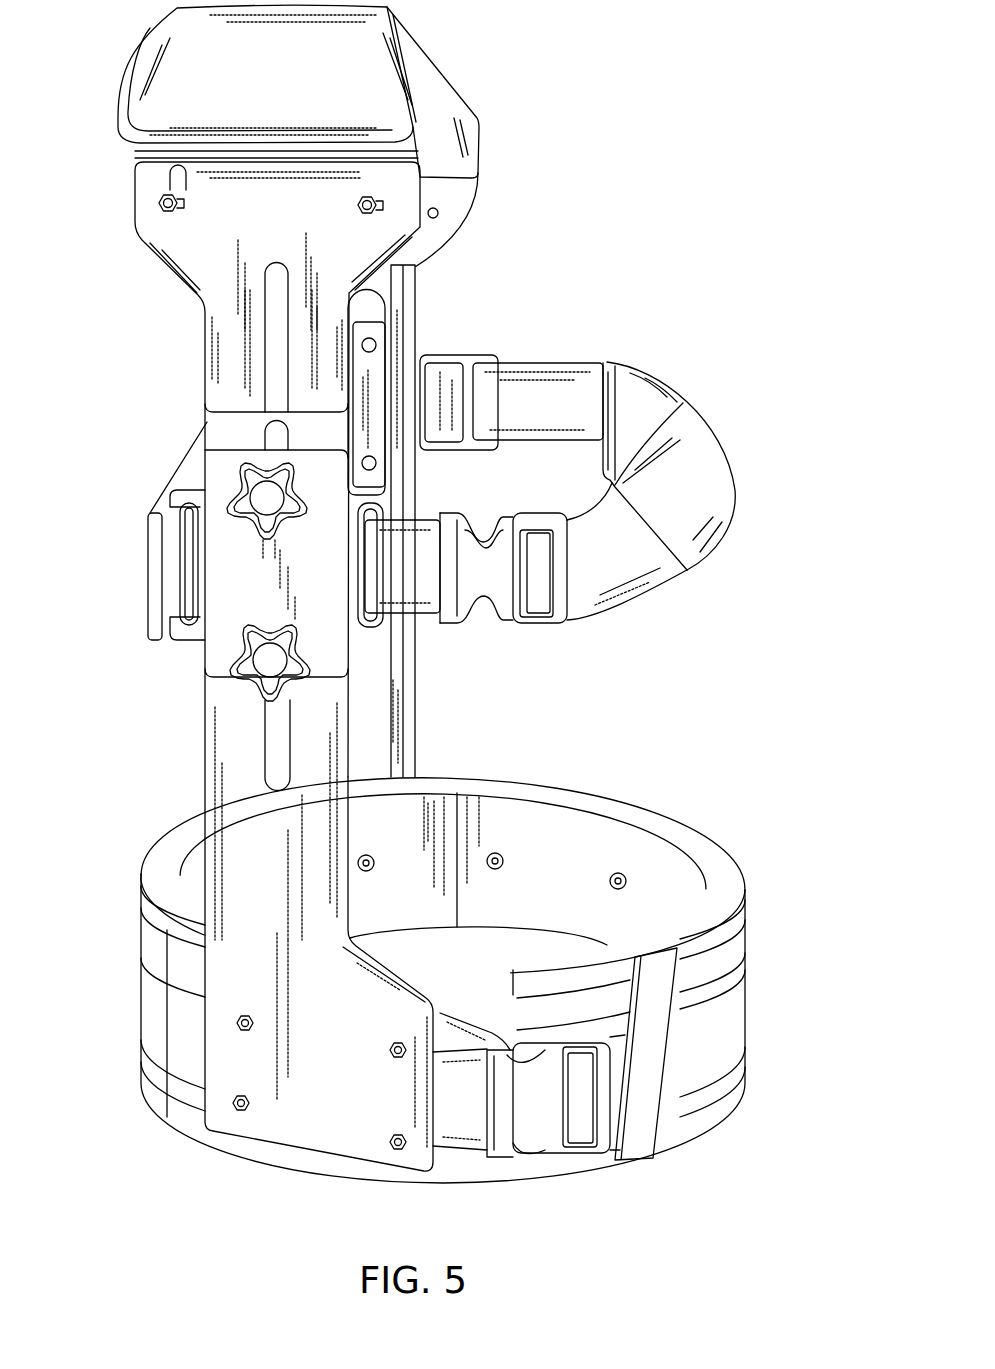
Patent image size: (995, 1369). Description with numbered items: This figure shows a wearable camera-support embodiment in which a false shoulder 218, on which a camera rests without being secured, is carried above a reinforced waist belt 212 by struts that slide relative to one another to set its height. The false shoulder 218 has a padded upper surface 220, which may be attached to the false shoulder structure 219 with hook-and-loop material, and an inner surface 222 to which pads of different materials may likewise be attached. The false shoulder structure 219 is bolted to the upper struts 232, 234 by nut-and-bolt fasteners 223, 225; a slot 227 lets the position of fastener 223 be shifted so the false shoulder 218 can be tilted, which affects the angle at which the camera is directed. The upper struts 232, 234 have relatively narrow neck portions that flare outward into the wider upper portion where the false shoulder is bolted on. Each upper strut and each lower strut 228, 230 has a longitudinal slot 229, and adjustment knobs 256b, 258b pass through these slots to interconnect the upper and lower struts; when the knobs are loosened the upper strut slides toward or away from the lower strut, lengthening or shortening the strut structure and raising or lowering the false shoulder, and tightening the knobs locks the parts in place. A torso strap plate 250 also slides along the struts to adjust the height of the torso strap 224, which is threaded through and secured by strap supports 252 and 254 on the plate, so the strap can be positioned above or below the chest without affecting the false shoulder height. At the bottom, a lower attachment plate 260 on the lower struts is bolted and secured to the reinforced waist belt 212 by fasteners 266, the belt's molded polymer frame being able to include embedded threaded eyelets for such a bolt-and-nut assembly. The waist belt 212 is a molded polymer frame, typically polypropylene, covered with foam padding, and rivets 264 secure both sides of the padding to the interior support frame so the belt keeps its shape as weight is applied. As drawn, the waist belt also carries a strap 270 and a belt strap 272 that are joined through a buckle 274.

The reinforced waist belt 212 is at (562, 785).
The false shoulder 218 is at (494, 92).
The false shoulder structure 219 is at (140, 152).
The padded upper surface 220 is at (180, 23).
The inner surface 222 is at (470, 150).
The nut-and-bolt fastener 223 is at (158, 205).
The torso strap 224 is at (650, 590).
The nut-and-bolt fastener 225 is at (385, 205).
The slot 227 is at (126, 173).
The lower strut 228 is at (220, 428).
The adjustment slot 229 is at (272, 312).
The lower strut 230 is at (400, 660).
The upper strut 232 is at (235, 357).
The upper strut 234 is at (432, 245).
The torso strap plate 250 is at (222, 593).
The strap support 252 is at (165, 508).
The strap support 254 is at (383, 500).
The adjustment knob 256b is at (240, 490).
The adjustment knob 258b is at (262, 665).
The lower attachment plate 260 is at (240, 1003).
The rivet 264 is at (630, 880).
The fastener 266 is at (240, 1112).
The vertical belt strap 270 is at (735, 1005).
The belt strap 272 is at (632, 1148).
The belt buckle 274 is at (553, 1140).